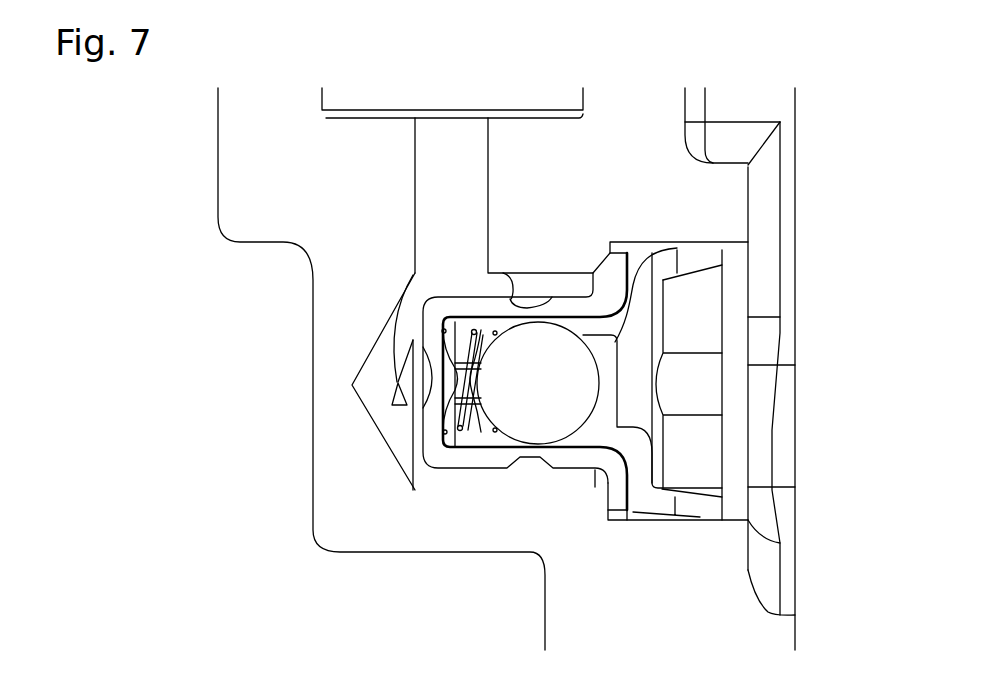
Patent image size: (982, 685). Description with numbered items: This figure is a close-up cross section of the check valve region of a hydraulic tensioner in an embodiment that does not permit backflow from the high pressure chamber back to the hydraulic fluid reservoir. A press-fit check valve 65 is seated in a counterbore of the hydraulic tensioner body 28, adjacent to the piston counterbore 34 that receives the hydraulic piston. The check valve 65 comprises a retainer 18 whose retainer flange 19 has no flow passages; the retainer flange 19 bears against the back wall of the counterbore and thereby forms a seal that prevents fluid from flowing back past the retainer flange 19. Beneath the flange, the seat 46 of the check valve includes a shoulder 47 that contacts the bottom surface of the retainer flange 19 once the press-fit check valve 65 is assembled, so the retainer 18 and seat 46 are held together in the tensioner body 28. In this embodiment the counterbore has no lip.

The retainer 18 is at (483, 457).
The retainer flange 19 is at (615, 490).
The hydraulic tensioner body 28 is at (316, 195).
The piston counterbore 34 is at (540, 101).
The seat 46 is at (590, 331).
The shoulder 47 is at (637, 465).
The press-fit check valve 65 is at (370, 391).